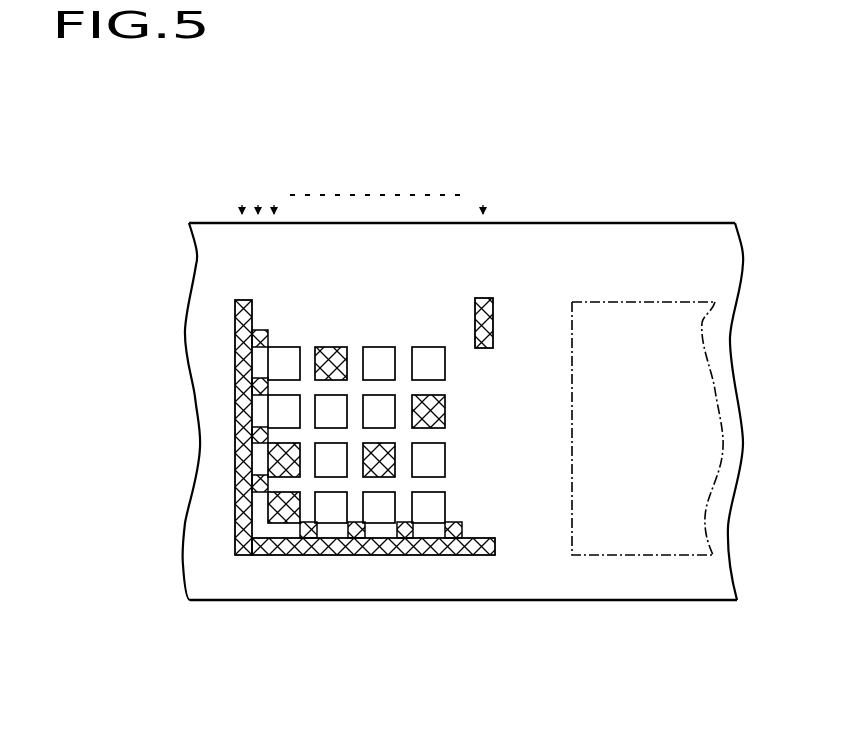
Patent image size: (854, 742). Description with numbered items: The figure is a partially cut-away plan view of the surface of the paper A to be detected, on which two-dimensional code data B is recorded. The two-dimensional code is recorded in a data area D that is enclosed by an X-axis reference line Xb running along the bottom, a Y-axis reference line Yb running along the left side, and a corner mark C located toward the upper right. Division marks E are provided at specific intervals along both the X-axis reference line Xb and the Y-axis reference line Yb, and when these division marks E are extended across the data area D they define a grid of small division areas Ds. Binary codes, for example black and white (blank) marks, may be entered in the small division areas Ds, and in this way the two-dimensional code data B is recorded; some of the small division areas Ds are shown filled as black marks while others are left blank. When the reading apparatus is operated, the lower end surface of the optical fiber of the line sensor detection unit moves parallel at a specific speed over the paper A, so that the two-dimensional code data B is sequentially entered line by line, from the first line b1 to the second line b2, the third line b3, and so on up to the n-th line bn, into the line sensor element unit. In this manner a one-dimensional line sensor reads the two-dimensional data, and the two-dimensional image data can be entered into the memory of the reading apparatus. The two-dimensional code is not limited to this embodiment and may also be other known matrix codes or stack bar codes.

The paper A is at (512, 600).
The two-dimensional code data B is at (396, 490).
The corner mark C is at (493, 298).
The data area D is at (270, 305).
The small division area Ds is at (335, 347).
The division marks E is at (233, 480).
The Y-axis reference line Yb is at (233, 437).
The X-axis reference line Xb is at (418, 530).
The first line of two-dimensional code data b1 is at (242, 200).
The second line of two-dimensional code data b2 is at (258, 200).
The third line of two-dimensional code data b3 is at (274, 200).
The n-th line of two-dimensional code data bn is at (486, 200).